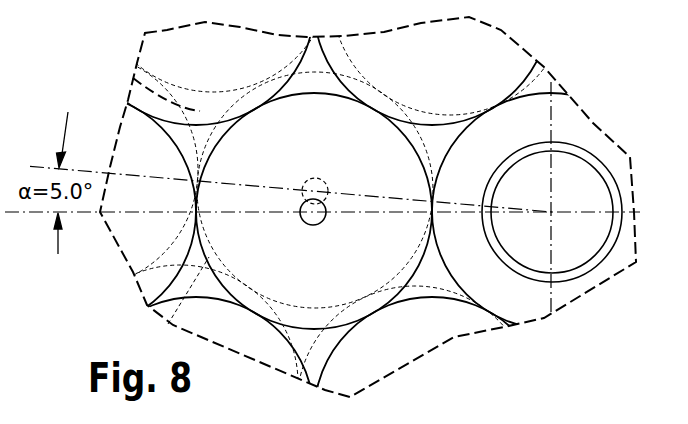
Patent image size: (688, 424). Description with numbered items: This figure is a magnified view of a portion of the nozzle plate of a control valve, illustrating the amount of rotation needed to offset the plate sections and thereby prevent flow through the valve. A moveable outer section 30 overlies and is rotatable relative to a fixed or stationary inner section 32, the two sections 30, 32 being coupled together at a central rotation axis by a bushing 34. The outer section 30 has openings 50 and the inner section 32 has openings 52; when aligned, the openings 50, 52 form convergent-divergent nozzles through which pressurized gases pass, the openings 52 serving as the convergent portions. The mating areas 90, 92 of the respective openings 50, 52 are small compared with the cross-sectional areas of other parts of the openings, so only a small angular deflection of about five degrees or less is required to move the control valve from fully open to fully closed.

The outer section 30 is at (519, 309).
The inner section 32 is at (132, 77).
The bushing 34 is at (557, 206).
The openings of the outer section 50 is at (287, 352).
The openings of the inner section 52 is at (168, 324).
The mating area of the outer section opening 90 is at (315, 178).
The mating area of the inner section opening 92 is at (319, 225).